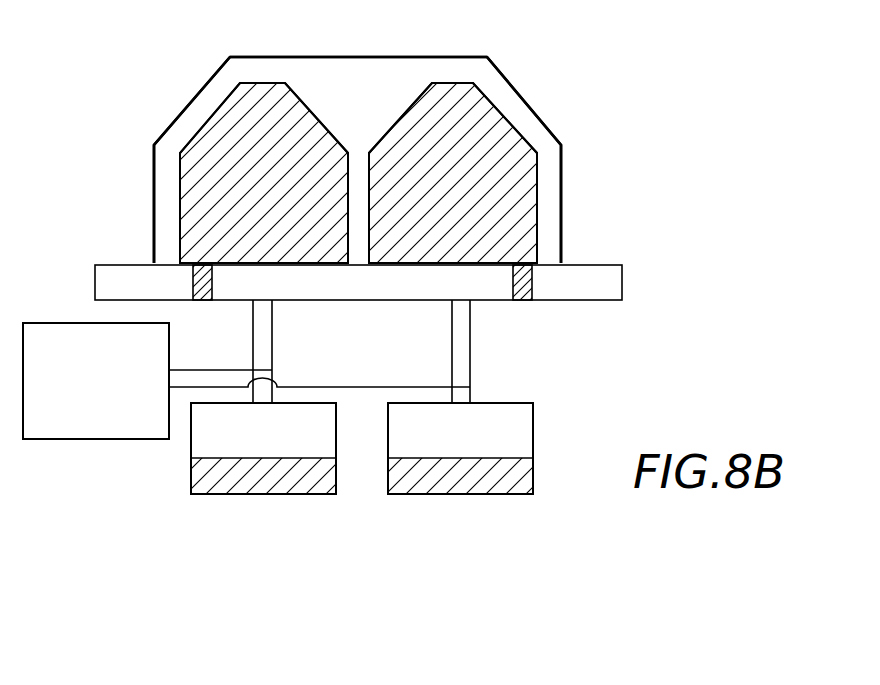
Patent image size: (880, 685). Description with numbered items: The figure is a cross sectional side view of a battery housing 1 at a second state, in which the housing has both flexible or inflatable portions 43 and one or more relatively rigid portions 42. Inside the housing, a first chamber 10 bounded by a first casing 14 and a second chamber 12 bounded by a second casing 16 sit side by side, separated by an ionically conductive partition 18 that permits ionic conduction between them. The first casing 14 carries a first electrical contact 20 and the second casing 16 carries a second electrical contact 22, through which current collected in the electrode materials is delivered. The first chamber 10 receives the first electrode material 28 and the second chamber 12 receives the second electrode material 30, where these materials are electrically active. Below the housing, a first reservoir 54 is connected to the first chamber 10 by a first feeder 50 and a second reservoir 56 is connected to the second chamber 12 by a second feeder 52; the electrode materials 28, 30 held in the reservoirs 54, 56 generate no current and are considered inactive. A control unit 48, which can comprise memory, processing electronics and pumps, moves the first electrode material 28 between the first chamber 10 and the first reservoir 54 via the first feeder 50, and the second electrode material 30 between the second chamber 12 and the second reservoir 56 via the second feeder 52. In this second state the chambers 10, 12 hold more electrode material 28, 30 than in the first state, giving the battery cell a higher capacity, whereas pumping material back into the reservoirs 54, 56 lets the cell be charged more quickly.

The battery housing 1 is at (659, 77).
The first chamber 10 is at (275, 108).
The second chamber 12 is at (466, 116).
The first casing 14 is at (200, 110).
The second casing 16 is at (528, 122).
The ionically conductive partition 18 is at (360, 249).
The first electrical contact 20 is at (207, 298).
The second electrical contact 22 is at (532, 292).
The first electrode material 28 is at (246, 190).
The second electrode material 30 is at (446, 190).
The rigid portion 42 is at (603, 284).
The flexible or inflatable portion 43 is at (408, 78).
The control unit 48 is at (41, 348).
The first feeder 50 is at (267, 347).
The second feeder 52 is at (462, 347).
The first reservoir 54 is at (218, 495).
The second reservoir 56 is at (420, 495).